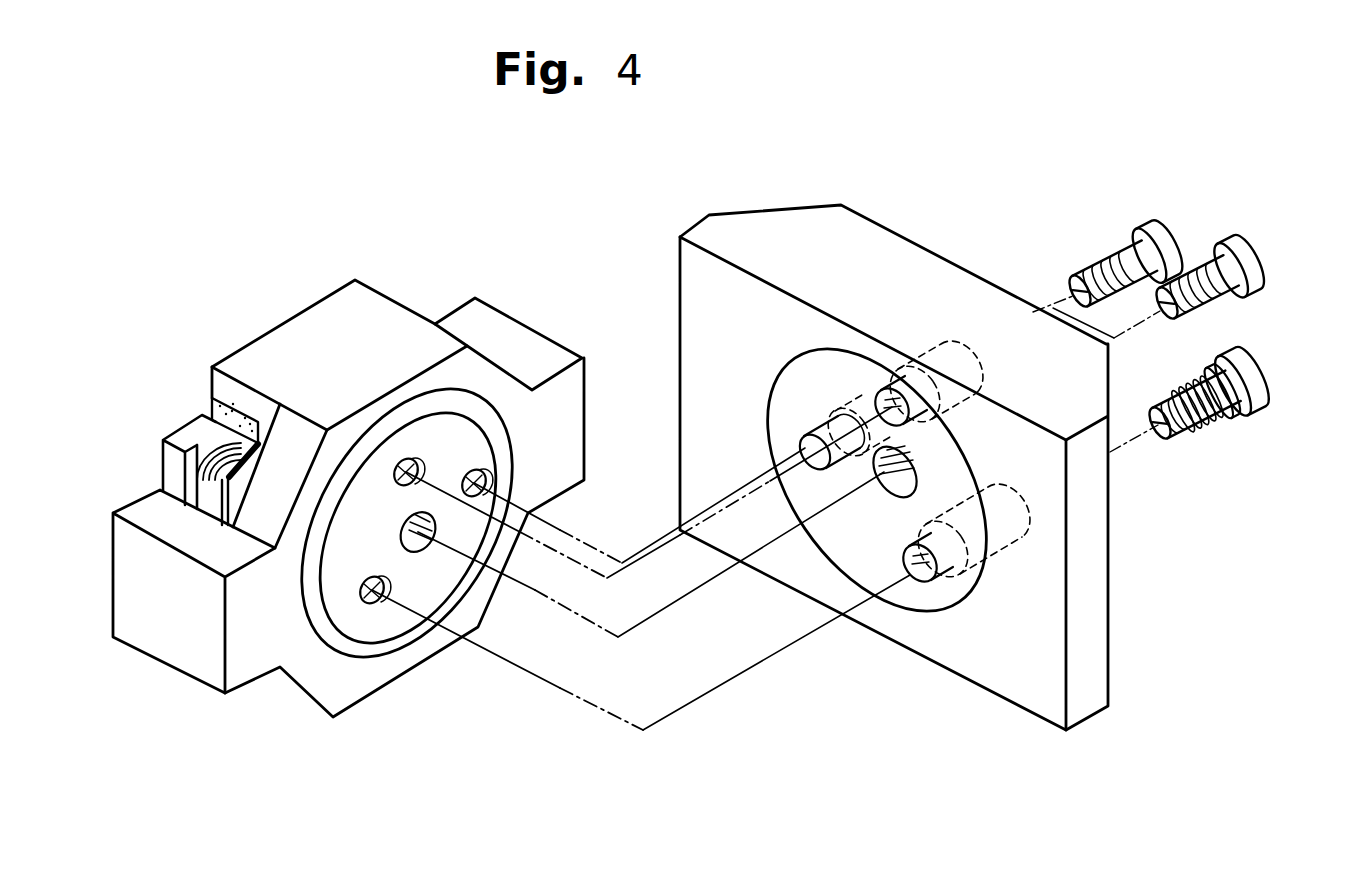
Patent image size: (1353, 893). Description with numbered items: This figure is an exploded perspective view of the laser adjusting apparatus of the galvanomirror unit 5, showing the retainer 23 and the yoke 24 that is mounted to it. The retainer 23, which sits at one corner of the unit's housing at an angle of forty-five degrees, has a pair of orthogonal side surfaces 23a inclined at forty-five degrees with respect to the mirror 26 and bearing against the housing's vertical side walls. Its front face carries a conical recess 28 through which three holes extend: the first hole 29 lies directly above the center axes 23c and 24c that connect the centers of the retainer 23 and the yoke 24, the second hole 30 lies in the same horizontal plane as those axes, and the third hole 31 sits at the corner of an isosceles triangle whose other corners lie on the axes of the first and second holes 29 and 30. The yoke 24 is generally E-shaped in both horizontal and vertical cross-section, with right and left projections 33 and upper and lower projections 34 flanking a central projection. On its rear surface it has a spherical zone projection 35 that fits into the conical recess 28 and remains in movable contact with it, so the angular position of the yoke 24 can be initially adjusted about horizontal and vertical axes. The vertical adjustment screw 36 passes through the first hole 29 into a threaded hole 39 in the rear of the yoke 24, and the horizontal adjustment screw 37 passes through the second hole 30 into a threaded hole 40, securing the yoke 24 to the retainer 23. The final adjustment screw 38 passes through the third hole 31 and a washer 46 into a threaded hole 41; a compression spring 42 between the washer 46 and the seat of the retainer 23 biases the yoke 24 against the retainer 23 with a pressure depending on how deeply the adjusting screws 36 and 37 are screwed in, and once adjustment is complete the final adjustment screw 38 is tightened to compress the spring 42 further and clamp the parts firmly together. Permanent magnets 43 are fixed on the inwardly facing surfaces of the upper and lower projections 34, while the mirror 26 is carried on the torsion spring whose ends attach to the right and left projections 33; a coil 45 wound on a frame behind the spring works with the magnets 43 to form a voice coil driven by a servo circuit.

The galvanomirror unit 5 is at (1064, 130).
The retainer 23 is at (1104, 616).
The side surfaces 23a is at (785, 205).
The center axis 23c is at (897, 496).
The yoke 24 is at (483, 288).
The center axis 24c is at (421, 545).
The mirror 26 is at (170, 424).
The conical recess 28 is at (895, 597).
The first hole 29 is at (888, 387).
The second hole 30 is at (803, 460).
The third hole 31 is at (918, 586).
The right and left projections 33 is at (187, 655).
The upper and lower projections 34 is at (290, 345).
The spherical zone projection 35 is at (366, 654).
The vertical adjustment screw 36 is at (1229, 250).
The horizontal adjustment screw 37 is at (1152, 240).
The final adjustment screw 38 is at (1244, 380).
The threaded hole 39 is at (404, 462).
The threaded hole 40 is at (486, 479).
The threaded hole 41 is at (378, 597).
The compression spring 42 is at (1205, 425).
The permanent magnets 43 is at (226, 410).
The coil 45 is at (203, 488).
The washer 46 is at (1260, 400).